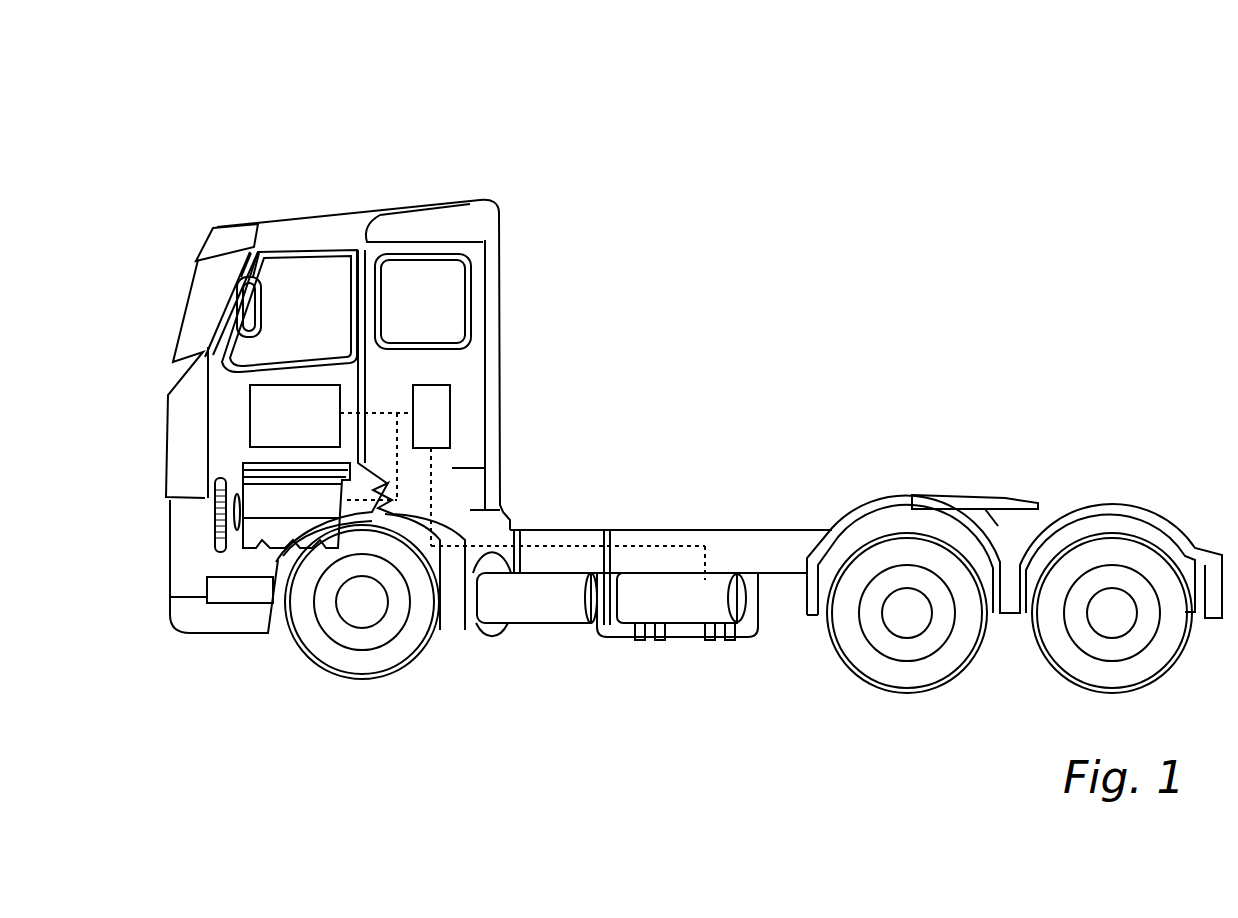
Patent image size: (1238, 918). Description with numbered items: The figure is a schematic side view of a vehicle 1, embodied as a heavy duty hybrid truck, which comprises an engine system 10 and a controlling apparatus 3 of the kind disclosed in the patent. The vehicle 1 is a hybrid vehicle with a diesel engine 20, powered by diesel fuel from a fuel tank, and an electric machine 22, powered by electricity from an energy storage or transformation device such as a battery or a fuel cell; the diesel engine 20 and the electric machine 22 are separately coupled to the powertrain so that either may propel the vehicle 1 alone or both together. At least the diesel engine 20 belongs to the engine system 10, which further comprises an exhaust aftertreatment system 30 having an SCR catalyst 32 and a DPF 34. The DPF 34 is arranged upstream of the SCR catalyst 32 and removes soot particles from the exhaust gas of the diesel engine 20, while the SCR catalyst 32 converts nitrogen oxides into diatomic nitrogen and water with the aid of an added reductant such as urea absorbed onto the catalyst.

The vehicle 1 is at (219, 127).
The engine system 10 is at (518, 489).
The diesel engine 20 is at (252, 546).
The electric machine 22 is at (297, 415).
The controlling apparatus 3 is at (450, 413).
The exhaust aftertreatment system 30 is at (470, 695).
The SCR catalyst 32 is at (687, 600).
The DPF 34 is at (547, 600).